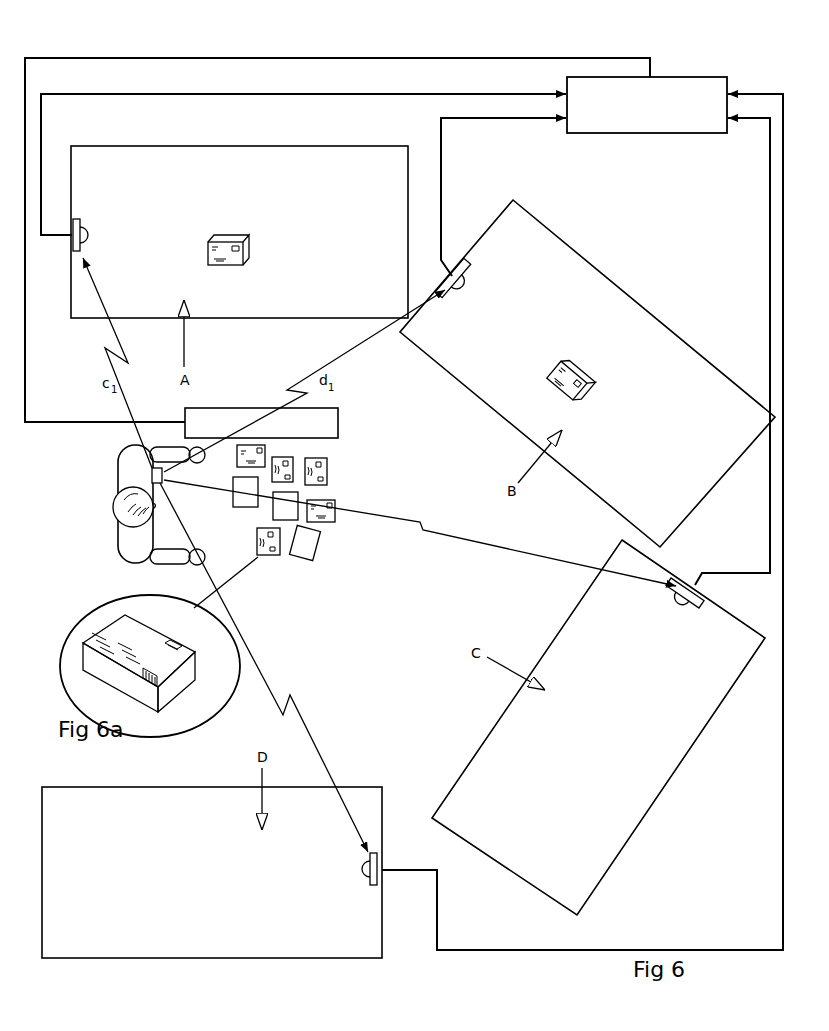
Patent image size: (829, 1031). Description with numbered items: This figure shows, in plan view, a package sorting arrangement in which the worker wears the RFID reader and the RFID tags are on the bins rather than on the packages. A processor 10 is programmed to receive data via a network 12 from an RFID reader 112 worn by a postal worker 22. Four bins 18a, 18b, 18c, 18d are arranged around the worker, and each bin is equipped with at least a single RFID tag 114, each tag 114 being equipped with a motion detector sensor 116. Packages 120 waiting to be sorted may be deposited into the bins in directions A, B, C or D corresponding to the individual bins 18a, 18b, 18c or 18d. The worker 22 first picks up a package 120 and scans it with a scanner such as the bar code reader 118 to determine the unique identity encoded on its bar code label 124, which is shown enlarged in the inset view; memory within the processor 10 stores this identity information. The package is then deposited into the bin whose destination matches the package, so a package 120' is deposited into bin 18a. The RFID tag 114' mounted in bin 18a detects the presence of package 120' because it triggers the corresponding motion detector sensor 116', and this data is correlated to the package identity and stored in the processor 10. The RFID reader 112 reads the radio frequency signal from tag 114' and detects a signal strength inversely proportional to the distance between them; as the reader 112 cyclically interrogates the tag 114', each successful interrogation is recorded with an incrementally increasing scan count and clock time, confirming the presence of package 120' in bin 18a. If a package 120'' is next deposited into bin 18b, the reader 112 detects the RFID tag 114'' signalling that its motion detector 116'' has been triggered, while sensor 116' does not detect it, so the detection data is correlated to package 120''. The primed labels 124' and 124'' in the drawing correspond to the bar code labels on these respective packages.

In FIG. 6, the processor 10 is at (672, 72).
In FIG. 6, the network 12 is at (146, 56).
In FIG. 6, the bin 18a is at (305, 318).
In FIG. 6, the bin 18b is at (479, 395).
In FIG. 6, the bin 18c is at (567, 622).
In FIG. 6, the bin 18d is at (298, 787).
In FIG. 6, the worker 22 is at (128, 478).
In FIG. 6, the RFID reader 112 is at (150, 470).
In FIG. 6, the RFID tag 114 is at (515, 731).
In FIG. 6, the RFID tag 114' is at (66, 259).
In FIG. 6, the RFID tag 114'' is at (450, 294).
In FIG. 6, the motion detector sensor 116 is at (510, 760).
In FIG. 6, the motion detector sensor 116' is at (104, 205).
In FIG. 6, the motion detector sensor 116'' is at (509, 273).
In FIG. 6, the bar code reader 118 is at (340, 424).
In FIG. 6, the package 120 is at (298, 520).
In FIG. 6A, the package 120 is at (152, 666).
In FIG. 6, the package 120' is at (258, 239).
In FIG. 6, the package 120'' is at (557, 374).
In FIG. 6A, the bar code label 124 is at (184, 672).
In FIG. 6, the bar code label 124' is at (195, 239).
In FIG. 6, the bar code label 124'' is at (605, 403).